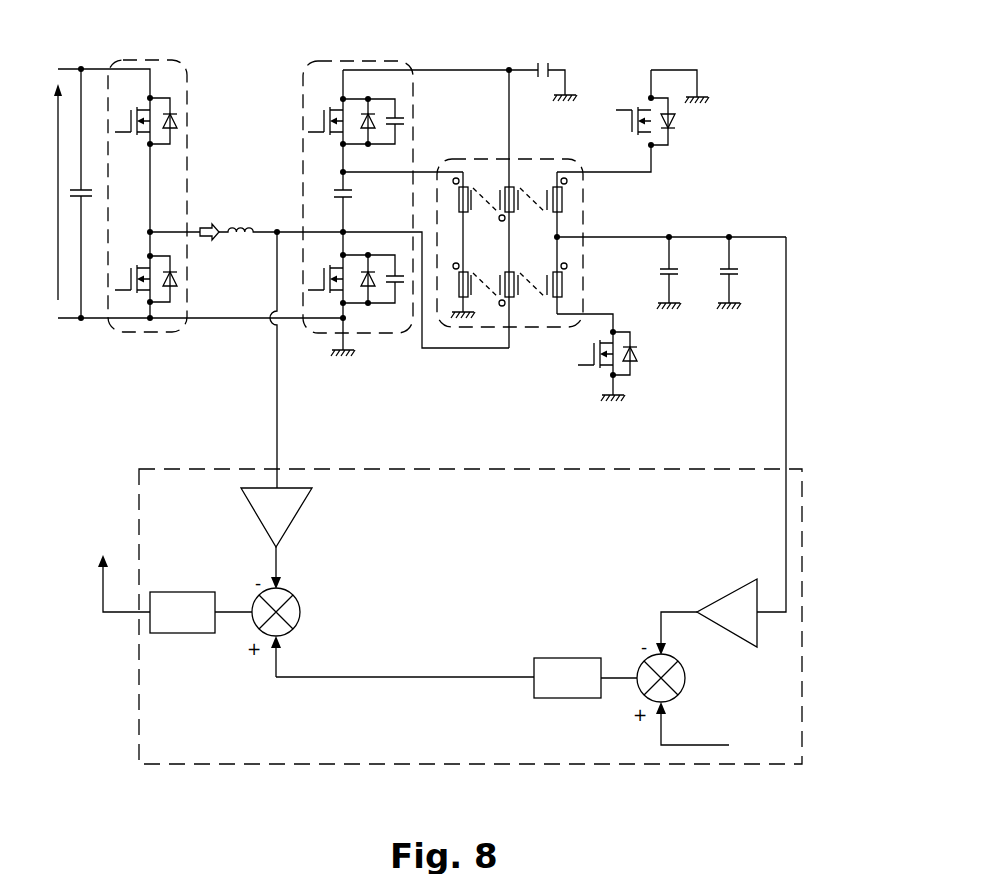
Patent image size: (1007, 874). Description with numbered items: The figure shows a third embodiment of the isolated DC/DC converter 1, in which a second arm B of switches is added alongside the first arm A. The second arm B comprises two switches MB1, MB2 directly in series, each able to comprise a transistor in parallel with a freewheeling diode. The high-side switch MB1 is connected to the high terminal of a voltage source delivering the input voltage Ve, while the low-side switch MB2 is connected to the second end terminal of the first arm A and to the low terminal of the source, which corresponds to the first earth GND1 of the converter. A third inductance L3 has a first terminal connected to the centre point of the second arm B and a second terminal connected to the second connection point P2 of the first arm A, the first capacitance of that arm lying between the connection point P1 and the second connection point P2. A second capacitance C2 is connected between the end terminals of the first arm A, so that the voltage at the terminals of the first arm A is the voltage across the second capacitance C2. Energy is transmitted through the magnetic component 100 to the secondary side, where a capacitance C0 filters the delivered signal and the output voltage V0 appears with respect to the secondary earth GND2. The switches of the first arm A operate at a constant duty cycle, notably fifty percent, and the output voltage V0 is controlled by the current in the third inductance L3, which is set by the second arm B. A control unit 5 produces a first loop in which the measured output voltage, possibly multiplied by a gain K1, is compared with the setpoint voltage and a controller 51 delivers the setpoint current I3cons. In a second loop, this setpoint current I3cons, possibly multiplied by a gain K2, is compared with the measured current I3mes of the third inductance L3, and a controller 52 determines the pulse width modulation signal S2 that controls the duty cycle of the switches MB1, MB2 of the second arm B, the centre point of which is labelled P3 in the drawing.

The isolated DC/DC converter 1 is at (732, 58).
The control unit 5 is at (139, 701).
The controller 51 is at (567, 678).
The controller 52 is at (182, 612).
The magnetic component 100 is at (468, 160).
The first arm A is at (360, 61).
The second arm B is at (187, 95).
The first switch MB1 is at (135, 88).
The second switch MB2 is at (125, 306).
The connection point P1 is at (343, 172).
The second connection point P2 is at (343, 232).
The node P3 is at (150, 232).
The third inductance L3 is at (248, 245).
The second capacitance C2 is at (537, 68).
The capacitance C0 is at (680, 268).
The output voltage V0 is at (670, 268).
The input voltage Ve is at (61, 193).
The measured current I3mes is at (299, 360).
The setpoint current I3cons is at (405, 663).
The gain K1 is at (706, 617).
The gain K2 is at (276, 538).
The pulse width modulation signal S2 is at (119, 572).
The first earth GND1 is at (341, 358).
The secondary ground GND2 is at (709, 101).